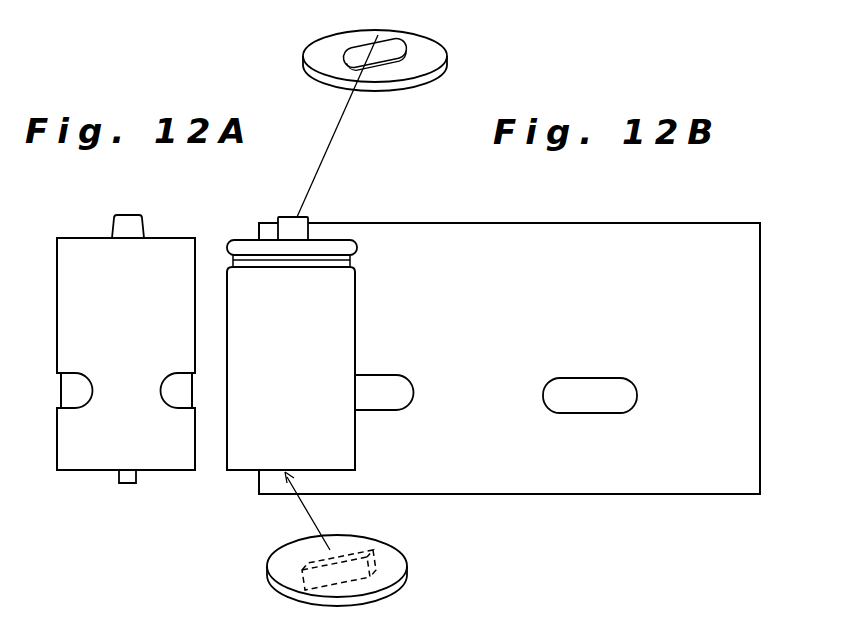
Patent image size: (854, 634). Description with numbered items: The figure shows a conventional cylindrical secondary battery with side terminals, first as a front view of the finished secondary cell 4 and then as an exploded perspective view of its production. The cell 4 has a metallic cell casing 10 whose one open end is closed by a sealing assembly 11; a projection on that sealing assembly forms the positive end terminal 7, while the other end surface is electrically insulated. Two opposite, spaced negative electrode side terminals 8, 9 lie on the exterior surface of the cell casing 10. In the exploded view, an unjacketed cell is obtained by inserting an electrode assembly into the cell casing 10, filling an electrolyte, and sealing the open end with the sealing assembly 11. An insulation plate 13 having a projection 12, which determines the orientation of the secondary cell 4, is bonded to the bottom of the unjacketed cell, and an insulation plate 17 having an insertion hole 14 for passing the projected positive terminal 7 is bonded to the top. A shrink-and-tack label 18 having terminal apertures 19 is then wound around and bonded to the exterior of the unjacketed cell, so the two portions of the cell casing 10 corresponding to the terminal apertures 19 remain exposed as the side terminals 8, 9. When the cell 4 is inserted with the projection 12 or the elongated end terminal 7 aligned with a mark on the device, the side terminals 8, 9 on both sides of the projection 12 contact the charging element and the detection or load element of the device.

In FIG. 12A, the secondary cell 4 is at (172, 233).
In FIG. 12A, the positive end terminal 7 is at (114, 216).
In FIG. 12B, the positive end terminal 7 is at (310, 229).
In FIG. 12A, the negative electrode side terminal 8 is at (177, 390).
In FIG. 12A, the negative electrode side terminal 9 is at (75, 392).
In FIG. 12A, the cell casing 10 is at (110, 418).
In FIG. 12B, the cell casing 10 is at (335, 343).
In FIG. 12B, the sealing assembly 11 is at (343, 248).
In FIG. 12A, the projection 12 is at (128, 490).
In FIG. 12B, the projection 12 is at (367, 558).
In FIG. 12B, the insulation plate 13 is at (408, 577).
In FIG. 12B, the insertion hole 14 is at (392, 57).
In FIG. 12B, the insulation plate 17 is at (445, 78).
In FIG. 12B, the shrink-and-tack label 18 is at (673, 245).
In FIG. 12B, the terminal aperture 19 is at (407, 390).